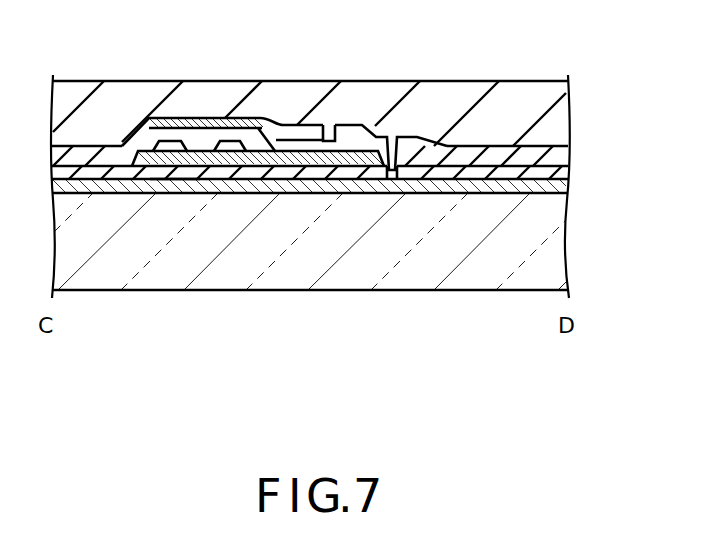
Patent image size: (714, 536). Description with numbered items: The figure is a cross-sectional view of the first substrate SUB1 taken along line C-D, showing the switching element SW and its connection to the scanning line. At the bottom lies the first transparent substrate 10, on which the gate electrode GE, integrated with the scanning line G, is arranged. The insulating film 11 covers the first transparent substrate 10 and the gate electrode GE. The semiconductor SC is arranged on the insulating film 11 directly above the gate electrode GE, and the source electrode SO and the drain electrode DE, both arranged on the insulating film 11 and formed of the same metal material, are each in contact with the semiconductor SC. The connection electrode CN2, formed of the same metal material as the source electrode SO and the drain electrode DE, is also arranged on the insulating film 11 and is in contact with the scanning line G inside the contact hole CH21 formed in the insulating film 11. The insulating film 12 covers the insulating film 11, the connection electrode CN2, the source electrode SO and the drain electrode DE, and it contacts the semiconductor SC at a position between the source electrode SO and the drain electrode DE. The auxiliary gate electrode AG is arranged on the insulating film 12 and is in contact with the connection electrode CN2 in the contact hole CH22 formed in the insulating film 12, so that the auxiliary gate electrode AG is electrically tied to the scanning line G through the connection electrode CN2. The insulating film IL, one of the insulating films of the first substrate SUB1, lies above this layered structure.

The first transparent substrate 10 is at (557, 260).
The insulating film 11 is at (557, 172).
The insulating film 12 is at (556, 155).
The insulating film IL is at (556, 120).
The scanning line G is at (334, 270).
The gate electrode GE is at (173, 190).
The semiconductor SC is at (226, 158).
The source electrode SO is at (168, 122).
The drain electrode DE is at (240, 118).
The auxiliary gate electrode AG is at (262, 120).
The connection electrode CN2 is at (402, 134).
The contact hole CH21 is at (394, 175).
The contact hole CH22 is at (333, 142).
The switching element SW is at (266, 196).
The first substrate SUB1 is at (340, 227).